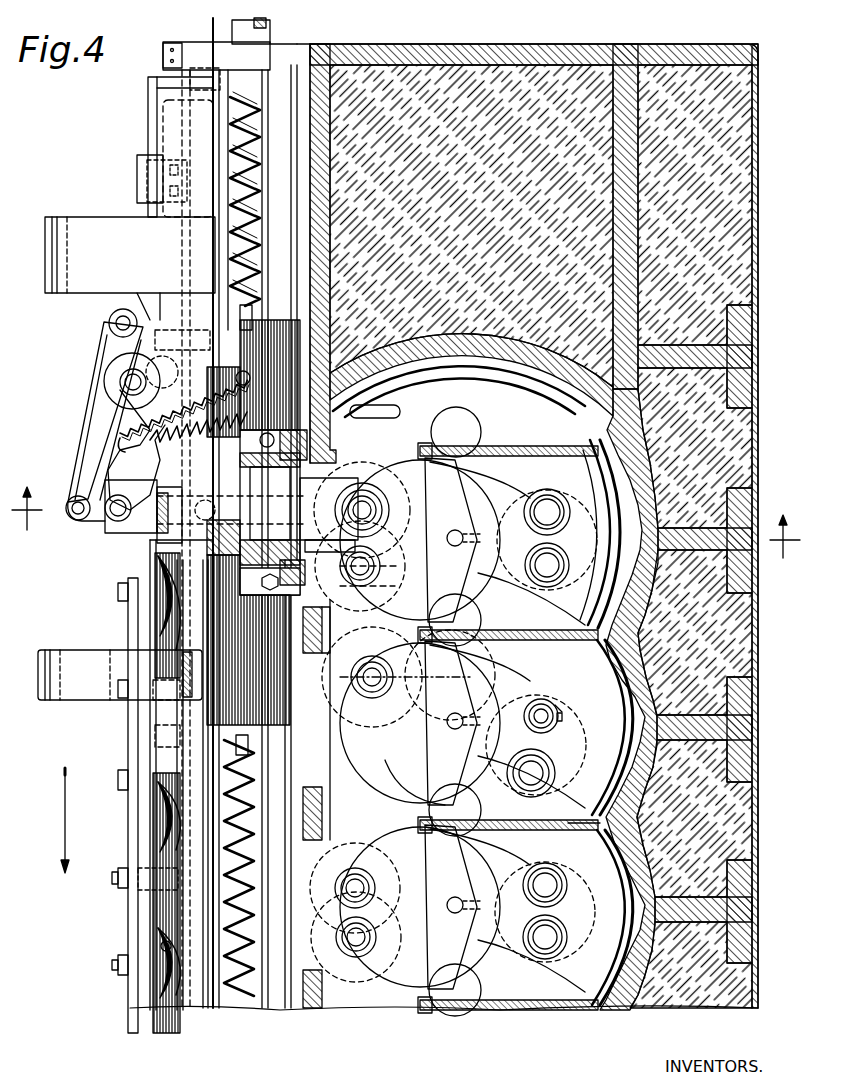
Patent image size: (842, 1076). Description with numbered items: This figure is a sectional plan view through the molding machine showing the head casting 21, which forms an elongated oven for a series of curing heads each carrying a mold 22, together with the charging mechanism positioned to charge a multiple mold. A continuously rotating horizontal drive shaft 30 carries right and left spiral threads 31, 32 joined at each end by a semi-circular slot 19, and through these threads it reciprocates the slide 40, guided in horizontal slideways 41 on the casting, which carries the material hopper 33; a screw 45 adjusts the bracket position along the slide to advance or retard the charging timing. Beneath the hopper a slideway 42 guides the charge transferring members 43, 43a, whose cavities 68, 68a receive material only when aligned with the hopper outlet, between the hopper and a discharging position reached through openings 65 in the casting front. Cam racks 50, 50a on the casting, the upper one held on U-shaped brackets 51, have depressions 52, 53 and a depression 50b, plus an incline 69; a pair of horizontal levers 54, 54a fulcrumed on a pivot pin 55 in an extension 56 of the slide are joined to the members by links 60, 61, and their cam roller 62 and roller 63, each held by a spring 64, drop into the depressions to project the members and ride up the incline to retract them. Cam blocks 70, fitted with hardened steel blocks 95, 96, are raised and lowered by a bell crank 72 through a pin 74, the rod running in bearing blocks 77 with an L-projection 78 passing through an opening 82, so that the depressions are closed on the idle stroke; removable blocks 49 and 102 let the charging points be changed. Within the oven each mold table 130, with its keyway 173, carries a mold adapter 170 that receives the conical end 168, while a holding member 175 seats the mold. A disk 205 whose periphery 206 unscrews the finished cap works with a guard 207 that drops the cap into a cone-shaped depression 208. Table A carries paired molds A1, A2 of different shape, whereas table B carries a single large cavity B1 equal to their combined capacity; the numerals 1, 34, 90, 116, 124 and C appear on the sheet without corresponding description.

The section line 1 is at (406, 522).
The semi-circular slot 19 is at (300, 46).
The head casting 21 is at (530, 47).
The mold 22 is at (560, 525).
The horizontal drive shaft 30 is at (272, 44).
The right spiral screw thread 31 is at (264, 150).
The left spiral screw thread 32 is at (262, 185).
The material hopper 33 is at (330, 572).
The connecting bar 34 is at (324, 46).
The slide 40 is at (262, 340).
The horizontal slideways 41 is at (292, 1008).
The slideway 42 is at (208, 508).
The charge transferring member 43 is at (320, 490).
The charge transferring member 43a is at (207, 530).
The screw 45 is at (325, 730).
The removable blocks 49 is at (175, 338).
The cam rack 50 is at (150, 562).
The cam rack 50a is at (168, 127).
The depression 50b is at (170, 385).
The U-shaped brackets 51 is at (78, 228).
The depressions 52 is at (162, 720).
The depressions 53 is at (175, 395).
The horizontal lever 54 is at (142, 438).
The horizontal lever 54a is at (92, 430).
The pivot pin 55 is at (110, 320).
The extension 56 is at (140, 300).
The link 60 is at (158, 522).
The link 61 is at (82, 518).
The cam roller 62 is at (140, 372).
The roller 63 is at (105, 378).
The spring 64 is at (118, 408).
The openings 65 is at (325, 460).
The cavity 68 is at (370, 488).
The cavity 68a is at (320, 480).
The incline 69 is at (160, 470).
The cam block 70 is at (172, 612).
The bell crank 72 is at (128, 621).
The pin 74 is at (118, 592).
The bearing blocks 77 is at (137, 165).
The L-projection 78 is at (152, 90).
The opening 82 is at (195, 70).
The gear box 90 is at (178, 462).
The hardened steel block 95 is at (162, 792).
The hardened steel block 96 is at (160, 600).
The removable block 102 is at (128, 878).
The top bar 116 is at (162, 60).
The bolt 124 is at (163, 52).
The mold table 130 is at (490, 568).
The tapered conical-shaped end 168 is at (548, 700).
The mold adapter 170 is at (535, 825).
The keyway 173 is at (562, 715).
The holding member 175 is at (490, 575).
The disk 205 is at (418, 480).
The periphery 206 is at (398, 760).
The guard 207 is at (520, 636).
The cone-shaped depression 208 is at (482, 433).
The table A is at (482, 498).
The mold A1 is at (362, 582).
The mold A2 is at (378, 585).
The table B is at (478, 714).
The cavity B1 is at (368, 698).
The cam station C is at (505, 908).